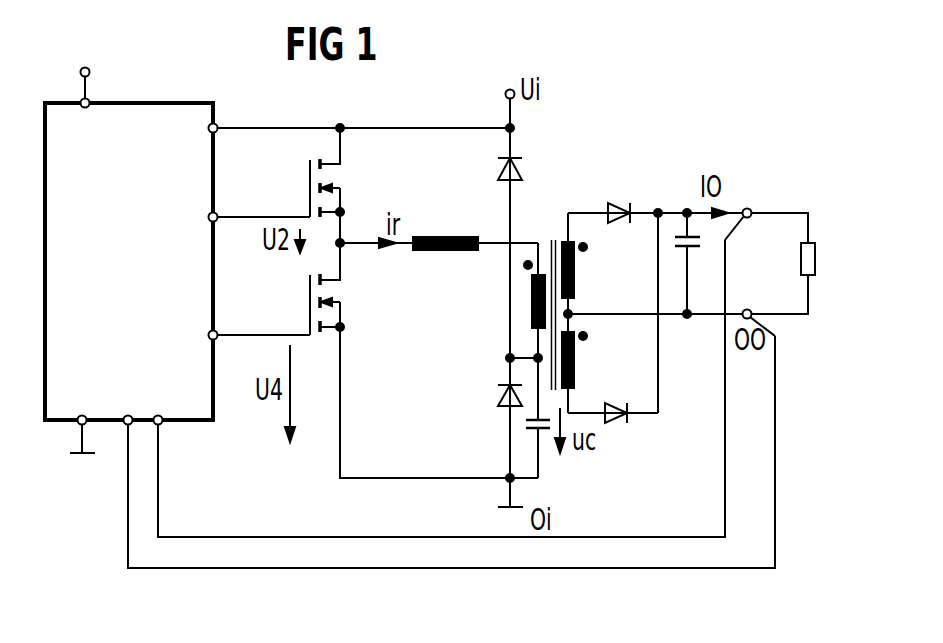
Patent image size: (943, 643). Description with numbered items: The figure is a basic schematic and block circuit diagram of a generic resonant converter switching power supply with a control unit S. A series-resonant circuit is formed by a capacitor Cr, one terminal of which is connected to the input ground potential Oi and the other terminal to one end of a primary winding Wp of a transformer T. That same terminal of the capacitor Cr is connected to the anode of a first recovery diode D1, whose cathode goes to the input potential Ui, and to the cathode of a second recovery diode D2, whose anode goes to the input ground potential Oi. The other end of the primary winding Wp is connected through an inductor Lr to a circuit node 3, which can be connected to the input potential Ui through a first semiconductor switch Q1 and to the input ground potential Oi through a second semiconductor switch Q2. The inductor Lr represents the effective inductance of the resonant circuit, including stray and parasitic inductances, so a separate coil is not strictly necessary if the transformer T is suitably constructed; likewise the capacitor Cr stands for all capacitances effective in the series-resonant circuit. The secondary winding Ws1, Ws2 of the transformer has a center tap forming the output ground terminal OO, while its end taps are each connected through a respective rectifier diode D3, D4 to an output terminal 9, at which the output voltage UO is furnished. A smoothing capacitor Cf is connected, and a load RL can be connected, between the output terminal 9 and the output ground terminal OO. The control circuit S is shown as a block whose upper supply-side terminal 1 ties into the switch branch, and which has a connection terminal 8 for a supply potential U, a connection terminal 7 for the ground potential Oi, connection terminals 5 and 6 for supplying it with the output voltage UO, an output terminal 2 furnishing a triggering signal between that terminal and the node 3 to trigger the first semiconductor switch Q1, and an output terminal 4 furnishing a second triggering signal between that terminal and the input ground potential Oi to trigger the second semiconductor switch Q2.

The control circuit output terminal 1 (supply rail) 1 is at (354, 130).
The output terminal 2 is at (251, 217).
The circuit node 3 is at (340, 243).
The output terminal 4 is at (251, 334).
The connection terminal 5 is at (436, 388).
The connection terminal 6 is at (446, 452).
The connection terminal 7 is at (82, 416).
The connection terminal 8 is at (91, 100).
The output terminal 9 is at (750, 210).
The control circuit S is at (129, 261).
The first semiconductor switch Q1 is at (312, 172).
The second semiconductor switch Q2 is at (311, 289).
The inductor Lr is at (475, 226).
The capacitor Cr is at (524, 426).
The first recovery diode D1 is at (499, 243).
The second recovery diode D2 is at (495, 418).
The rectifier diode D3 is at (613, 196).
The rectifier diode D4 is at (615, 430).
The transformer T is at (552, 292).
The primary winding Wp is at (532, 295).
The secondary winding Ws1 is at (594, 263).
The secondary winding Ws2 is at (594, 363).
The smoothing capacitor Cf is at (693, 263).
The load RL is at (796, 263).